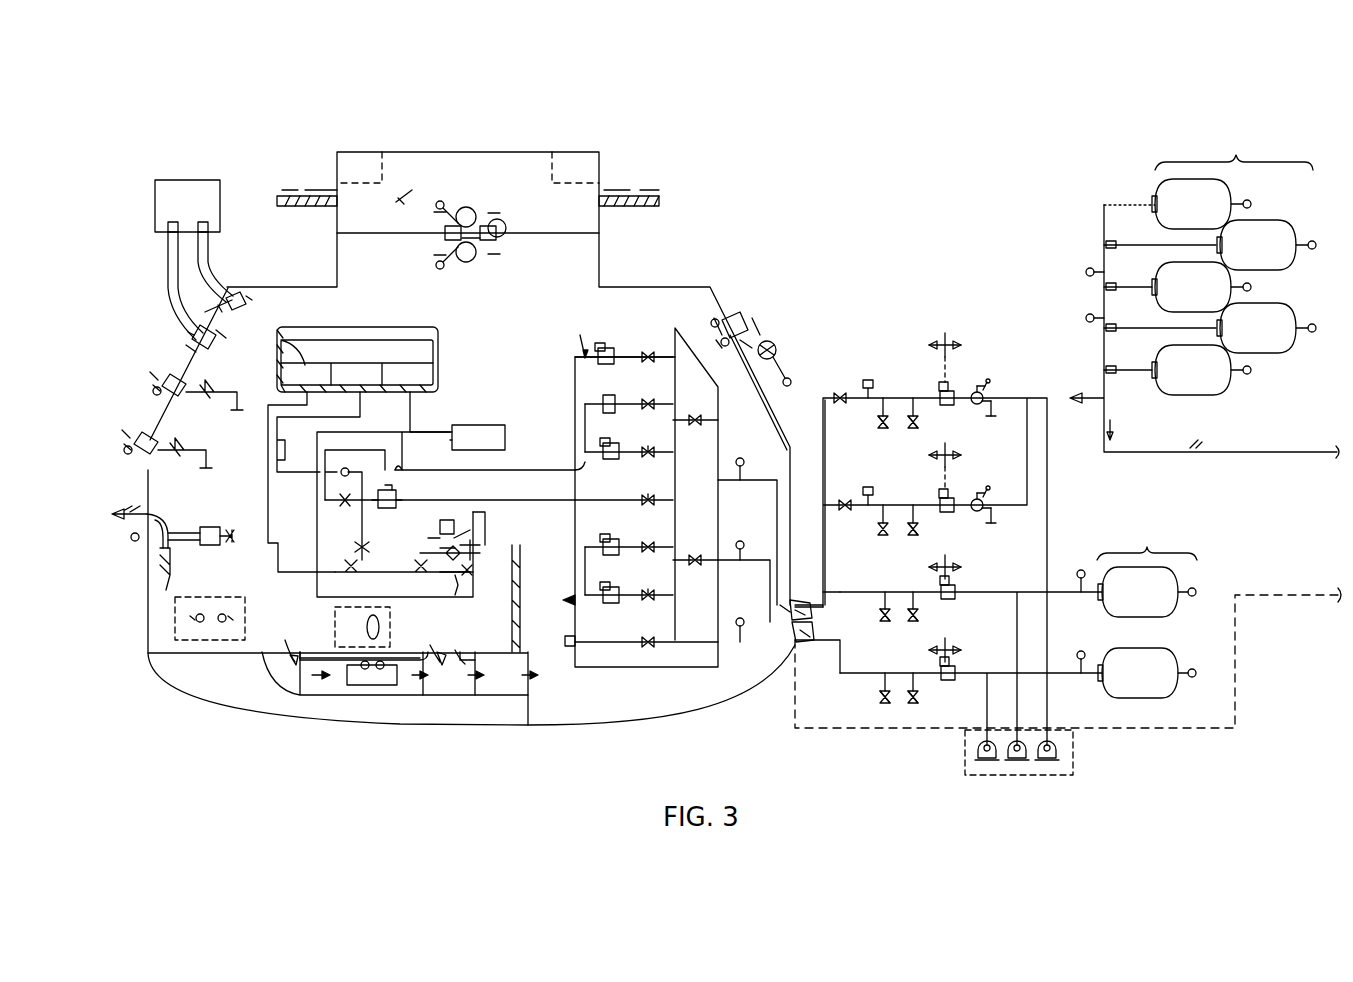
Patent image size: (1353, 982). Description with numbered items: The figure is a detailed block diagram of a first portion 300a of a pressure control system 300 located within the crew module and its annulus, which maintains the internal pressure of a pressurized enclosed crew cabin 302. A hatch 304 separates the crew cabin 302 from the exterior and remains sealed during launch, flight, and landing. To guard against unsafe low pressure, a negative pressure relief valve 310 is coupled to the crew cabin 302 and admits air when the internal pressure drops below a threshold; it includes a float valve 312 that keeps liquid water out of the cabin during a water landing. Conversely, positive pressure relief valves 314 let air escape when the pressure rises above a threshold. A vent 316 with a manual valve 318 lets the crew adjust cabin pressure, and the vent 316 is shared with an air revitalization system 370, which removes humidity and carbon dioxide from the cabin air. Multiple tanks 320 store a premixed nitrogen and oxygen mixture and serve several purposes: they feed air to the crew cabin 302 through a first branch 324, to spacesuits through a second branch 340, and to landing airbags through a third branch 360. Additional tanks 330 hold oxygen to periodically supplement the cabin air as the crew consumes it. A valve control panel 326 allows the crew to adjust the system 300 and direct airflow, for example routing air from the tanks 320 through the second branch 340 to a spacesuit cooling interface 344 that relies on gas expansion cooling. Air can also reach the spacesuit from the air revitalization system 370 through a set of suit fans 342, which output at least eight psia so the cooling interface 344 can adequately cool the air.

The pressure control system 300 is at (158, 75).
The first portion 300a is at (205, 145).
The pressurized enclosed crew cabin 302 is at (368, 290).
The hatch 304 is at (735, 320).
The negative pressure relief valve 310 is at (196, 337).
The float valve 312 is at (160, 222).
The positive pressure relief valve 314 is at (156, 380).
The vent 316 is at (147, 525).
The manual valve 318 is at (212, 546).
The tanks 320 is at (1201, 260).
The first branch 324 is at (580, 345).
The valve control panel 326 is at (622, 328).
The additional tanks 330 is at (1018, 646).
The second branch 340 is at (530, 470).
The set of suit fans 342 is at (440, 550).
The cooling interface 344 is at (284, 328).
The third branch 360 is at (1218, 452).
The air revitalization system 370 is at (410, 698).